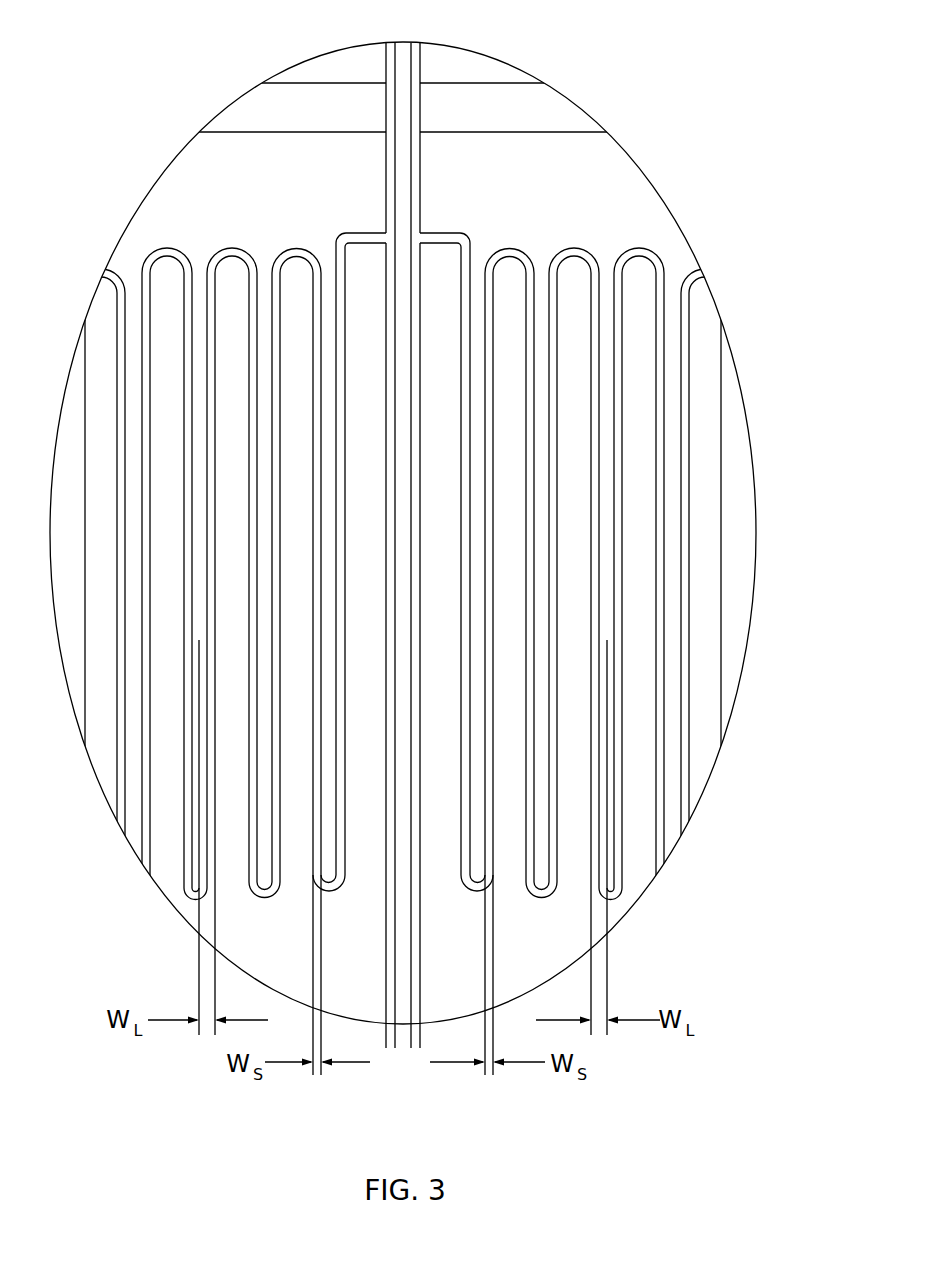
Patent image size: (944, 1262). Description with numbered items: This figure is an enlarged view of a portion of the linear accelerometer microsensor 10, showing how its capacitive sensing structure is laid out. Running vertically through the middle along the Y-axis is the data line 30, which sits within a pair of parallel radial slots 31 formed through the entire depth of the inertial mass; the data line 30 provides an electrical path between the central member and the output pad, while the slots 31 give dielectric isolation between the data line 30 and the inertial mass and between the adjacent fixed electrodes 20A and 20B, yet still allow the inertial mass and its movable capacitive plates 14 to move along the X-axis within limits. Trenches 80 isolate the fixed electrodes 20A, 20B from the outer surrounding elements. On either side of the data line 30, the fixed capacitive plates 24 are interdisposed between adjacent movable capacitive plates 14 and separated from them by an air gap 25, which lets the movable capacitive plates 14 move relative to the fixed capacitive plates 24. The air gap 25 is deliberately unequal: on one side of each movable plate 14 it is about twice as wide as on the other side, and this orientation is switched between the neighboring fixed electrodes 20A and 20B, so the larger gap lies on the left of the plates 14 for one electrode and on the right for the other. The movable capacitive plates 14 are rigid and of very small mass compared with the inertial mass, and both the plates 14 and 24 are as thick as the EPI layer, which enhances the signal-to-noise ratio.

The linear accelerometer microsensor 10 is at (650, 128).
The movable capacitive plates 14 is at (161, 858).
The fixed electrode 20A is at (192, 182).
The fixed electrode 20B is at (608, 194).
The fixed capacitive plates 24 is at (259, 262).
The air gap 25 is at (272, 890).
The data line 30 is at (400, 1052).
The radial slots 31 is at (388, 203).
The trenches 80 is at (504, 100).